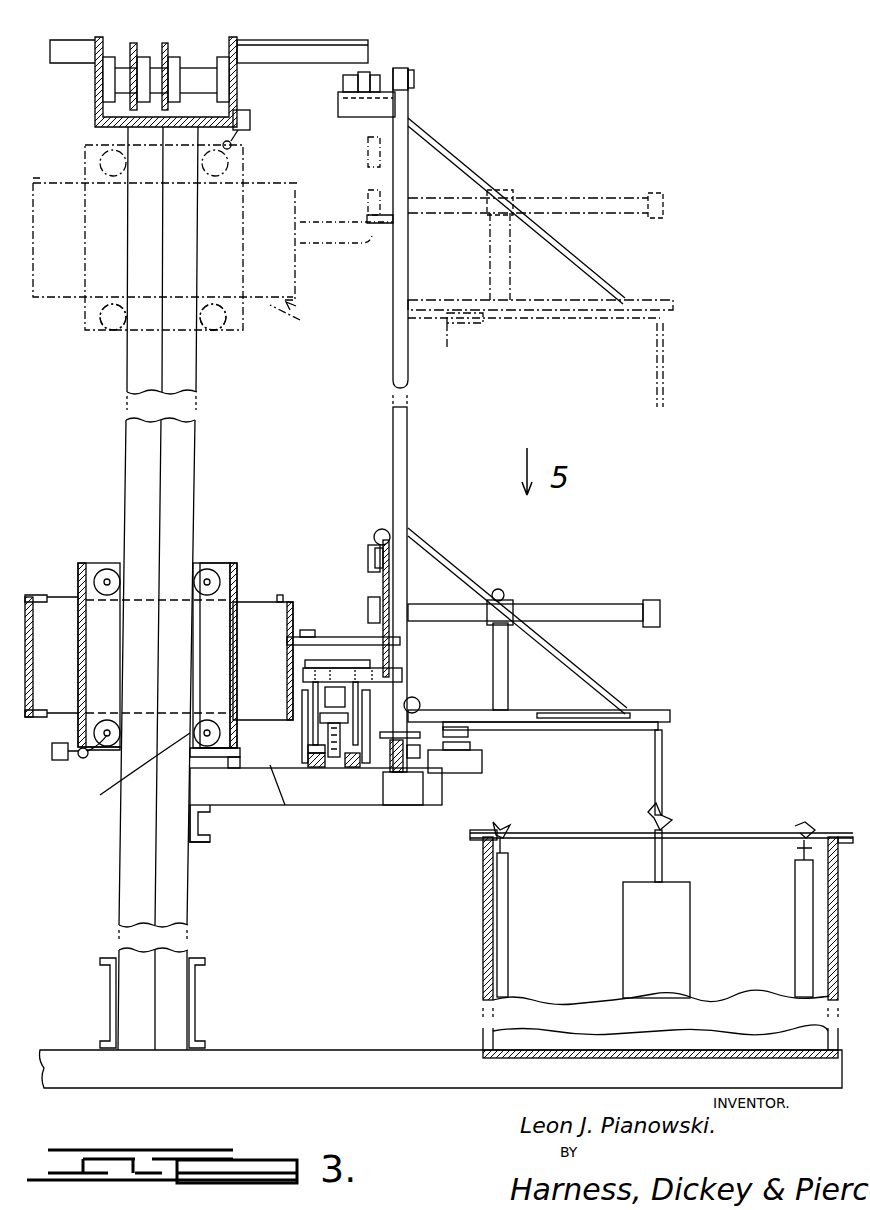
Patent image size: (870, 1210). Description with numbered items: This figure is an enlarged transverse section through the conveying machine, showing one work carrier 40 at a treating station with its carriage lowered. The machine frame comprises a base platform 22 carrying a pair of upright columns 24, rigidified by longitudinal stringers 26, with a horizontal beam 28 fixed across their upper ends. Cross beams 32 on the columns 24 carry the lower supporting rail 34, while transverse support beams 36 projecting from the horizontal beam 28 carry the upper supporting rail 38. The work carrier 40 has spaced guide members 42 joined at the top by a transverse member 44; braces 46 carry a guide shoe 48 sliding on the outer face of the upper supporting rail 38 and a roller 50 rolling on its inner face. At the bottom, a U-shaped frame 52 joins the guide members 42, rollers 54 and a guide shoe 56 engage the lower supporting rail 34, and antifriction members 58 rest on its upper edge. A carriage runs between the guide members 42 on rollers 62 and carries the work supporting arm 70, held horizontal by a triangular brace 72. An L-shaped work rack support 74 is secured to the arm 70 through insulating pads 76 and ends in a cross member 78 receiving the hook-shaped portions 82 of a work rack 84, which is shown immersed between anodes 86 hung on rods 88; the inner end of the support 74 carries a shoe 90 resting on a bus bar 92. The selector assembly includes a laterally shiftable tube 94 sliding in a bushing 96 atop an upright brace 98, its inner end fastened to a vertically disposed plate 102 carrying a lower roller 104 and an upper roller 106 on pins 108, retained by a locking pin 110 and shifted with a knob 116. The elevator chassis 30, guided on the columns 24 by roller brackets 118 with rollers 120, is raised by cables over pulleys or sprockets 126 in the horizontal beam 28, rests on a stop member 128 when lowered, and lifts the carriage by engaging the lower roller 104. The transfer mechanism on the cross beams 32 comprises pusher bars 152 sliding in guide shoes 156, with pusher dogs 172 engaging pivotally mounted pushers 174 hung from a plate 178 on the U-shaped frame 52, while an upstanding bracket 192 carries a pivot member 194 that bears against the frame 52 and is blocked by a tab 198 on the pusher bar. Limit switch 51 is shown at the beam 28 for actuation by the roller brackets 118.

The base platform 22 is at (320, 1050).
The upright columns 24 is at (135, 378).
The longitudinal stringers 26 is at (208, 842).
The horizontal beam 28 is at (238, 84).
The elevator chassis 30 is at (310, 320).
The cross beams 32 is at (272, 800).
The lower supporting rail 34 is at (395, 790).
The transverse support beams 36 is at (355, 47).
The upper supporting rail 38 is at (368, 72).
The work carriers 40 is at (421, 368).
The guide members 42 is at (418, 425).
The transverse member 44 is at (415, 78).
The braces 46 is at (352, 102).
The guide shoe 48 is at (395, 68).
The roller 50 is at (343, 83).
The limit switch 51 is at (245, 130).
The U-shaped frame 52 is at (58, 762).
The rollers 54 is at (458, 773).
The guide shoe 56 is at (393, 775).
The antifriction members 58 is at (405, 745).
The rollers 62 is at (390, 530).
The work supporting arm 70 is at (655, 300).
The triangular brace 72 is at (598, 262).
The L-shaped work rack support 74 is at (665, 360).
The insulating pads 76 is at (470, 726).
The cross member 78 is at (665, 805).
The hook-shaped portions 82 is at (672, 817).
The work rack 84 is at (685, 940).
The anodes 86 is at (510, 892).
The rods 88 is at (500, 828).
The shoe 90 is at (480, 740).
The bus bar 92 is at (445, 758).
The laterally shiftable tube 94 is at (434, 604).
The bushing 96 is at (515, 602).
The upright brace 98 is at (505, 690).
The vertically disposed plate 102 is at (375, 560).
The lower roller 104 is at (372, 612).
The upper roller 106 is at (376, 545).
The pins 108 is at (384, 560).
The locking pin 110 is at (503, 590).
The knob 116 is at (665, 196).
The roller brackets 118 is at (230, 328).
The rollers 120 is at (112, 318).
The pulleys or sprockets 126 is at (166, 44).
The stop member 128 is at (225, 770).
The pusher bars 152 is at (330, 770).
The guide shoes 156 is at (292, 800).
The pusher dogs 172 is at (328, 727).
The pivotally mounted pushers 174 is at (325, 697).
The plate 178 is at (308, 673).
The upstanding bracket 192 is at (322, 718).
The pivot member 194 is at (296, 640).
The tab 198 is at (312, 748).